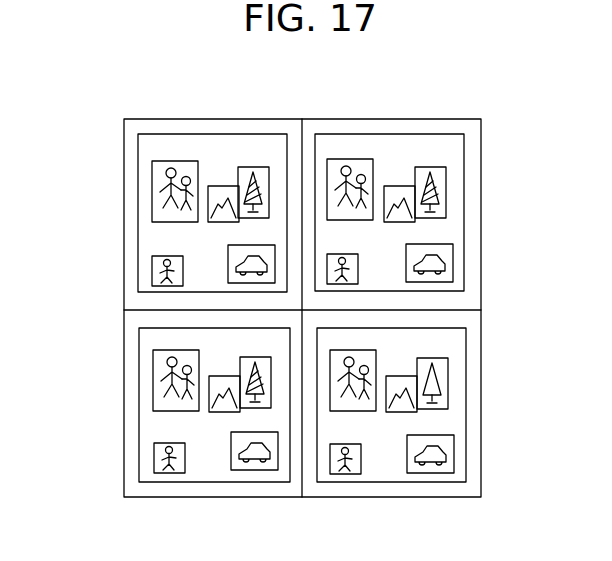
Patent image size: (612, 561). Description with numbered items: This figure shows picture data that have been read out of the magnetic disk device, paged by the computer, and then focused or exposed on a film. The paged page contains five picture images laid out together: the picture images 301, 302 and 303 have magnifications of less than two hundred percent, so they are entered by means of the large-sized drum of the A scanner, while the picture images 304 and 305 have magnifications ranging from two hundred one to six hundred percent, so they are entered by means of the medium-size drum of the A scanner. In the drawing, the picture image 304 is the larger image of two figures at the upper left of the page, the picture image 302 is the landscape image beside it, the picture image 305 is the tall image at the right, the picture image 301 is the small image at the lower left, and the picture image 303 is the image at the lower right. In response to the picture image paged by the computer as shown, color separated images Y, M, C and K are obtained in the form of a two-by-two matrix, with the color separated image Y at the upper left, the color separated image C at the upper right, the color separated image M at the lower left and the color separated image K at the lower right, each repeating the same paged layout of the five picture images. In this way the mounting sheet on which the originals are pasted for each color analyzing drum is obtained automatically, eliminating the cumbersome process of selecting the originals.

The picture image 301 is at (152, 272).
The picture image 302 is at (220, 186).
The picture image 303 is at (228, 255).
The picture image 304 is at (178, 161).
The picture image 305 is at (262, 167).
The color separated image Y is at (143, 152).
The color separated image C is at (457, 148).
The color separated image M is at (157, 425).
The color separated image K is at (453, 342).